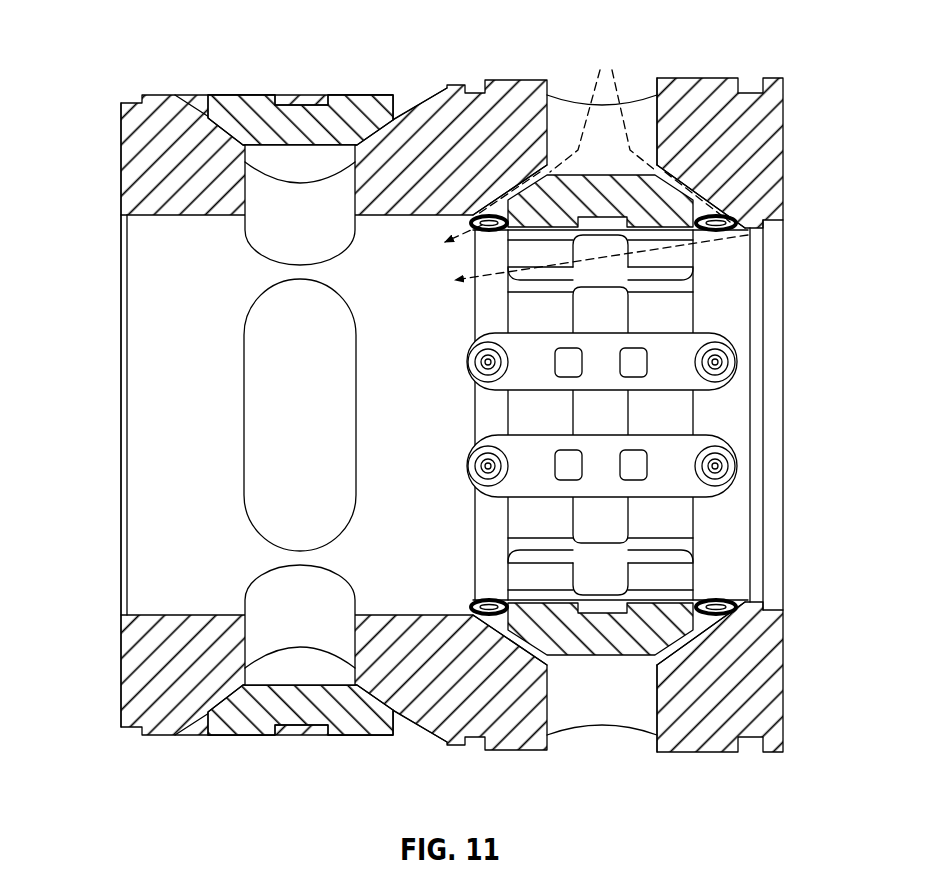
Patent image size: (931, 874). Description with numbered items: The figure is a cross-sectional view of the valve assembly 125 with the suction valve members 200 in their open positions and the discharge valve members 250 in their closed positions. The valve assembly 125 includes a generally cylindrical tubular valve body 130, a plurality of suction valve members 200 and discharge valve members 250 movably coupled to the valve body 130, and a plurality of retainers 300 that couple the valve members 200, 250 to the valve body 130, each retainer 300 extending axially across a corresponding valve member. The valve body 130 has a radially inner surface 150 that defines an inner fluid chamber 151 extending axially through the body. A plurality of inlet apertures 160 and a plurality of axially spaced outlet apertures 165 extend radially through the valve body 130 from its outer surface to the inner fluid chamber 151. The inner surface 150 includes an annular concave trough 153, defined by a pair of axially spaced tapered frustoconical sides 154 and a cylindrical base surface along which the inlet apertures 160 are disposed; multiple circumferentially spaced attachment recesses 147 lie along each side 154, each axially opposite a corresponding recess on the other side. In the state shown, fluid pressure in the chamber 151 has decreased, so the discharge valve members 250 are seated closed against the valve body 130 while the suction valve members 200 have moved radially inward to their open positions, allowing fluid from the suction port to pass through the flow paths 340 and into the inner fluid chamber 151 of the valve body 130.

The valve assembly 125 is at (150, 40).
The valve body 130 is at (125, 150).
The attachment recess 147 is at (698, 500).
The radially inner surface 150 is at (137, 366).
The inner fluid chamber 151 is at (145, 297).
The annular concave recess or trough 153 is at (733, 287).
The tapered frustoconical side 154 is at (485, 305).
The suction or inlet aperture 160 is at (640, 110).
The discharge or outlet aperture 165 is at (245, 235).
The suction or inlet valve member 200 is at (650, 170).
The discharge or outlet valve member 250 is at (237, 105).
The retainer 300 is at (660, 508).
The flow path 340 is at (598, 72).